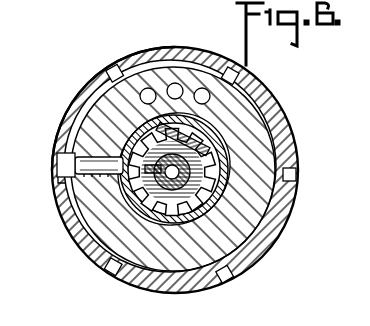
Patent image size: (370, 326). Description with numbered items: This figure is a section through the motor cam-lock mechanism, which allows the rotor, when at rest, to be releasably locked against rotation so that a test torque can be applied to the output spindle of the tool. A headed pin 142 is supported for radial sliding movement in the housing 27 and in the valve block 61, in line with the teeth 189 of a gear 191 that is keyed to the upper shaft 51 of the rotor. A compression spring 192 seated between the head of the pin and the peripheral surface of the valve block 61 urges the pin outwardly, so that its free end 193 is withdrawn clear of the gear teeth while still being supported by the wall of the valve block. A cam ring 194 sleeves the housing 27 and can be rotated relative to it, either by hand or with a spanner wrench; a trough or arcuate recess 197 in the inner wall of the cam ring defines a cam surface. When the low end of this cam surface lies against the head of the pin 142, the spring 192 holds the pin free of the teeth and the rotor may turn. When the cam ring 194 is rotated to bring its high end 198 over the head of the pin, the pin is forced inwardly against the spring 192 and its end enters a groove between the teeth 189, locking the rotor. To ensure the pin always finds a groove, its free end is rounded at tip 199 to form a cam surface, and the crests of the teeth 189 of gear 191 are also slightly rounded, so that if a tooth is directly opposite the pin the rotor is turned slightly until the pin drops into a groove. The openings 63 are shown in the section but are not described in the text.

The housing 27 is at (267, 122).
The valve block 61 is at (240, 212).
The cam ring 194 is at (90, 82).
The free end of the pin 193 is at (124, 134).
The high end of the cam ring 198 is at (108, 78).
The headed pin 142 is at (77, 213).
The bolt holes 63 is at (202, 89).
The rounded tip of the pin 199 is at (113, 182).
The gear teeth 189 is at (127, 204).
The gear 191 is at (180, 228).
The upper shaft 51 is at (226, 162).
The compression spring 192 is at (60, 153).
The arcuate recess 197 is at (58, 186).